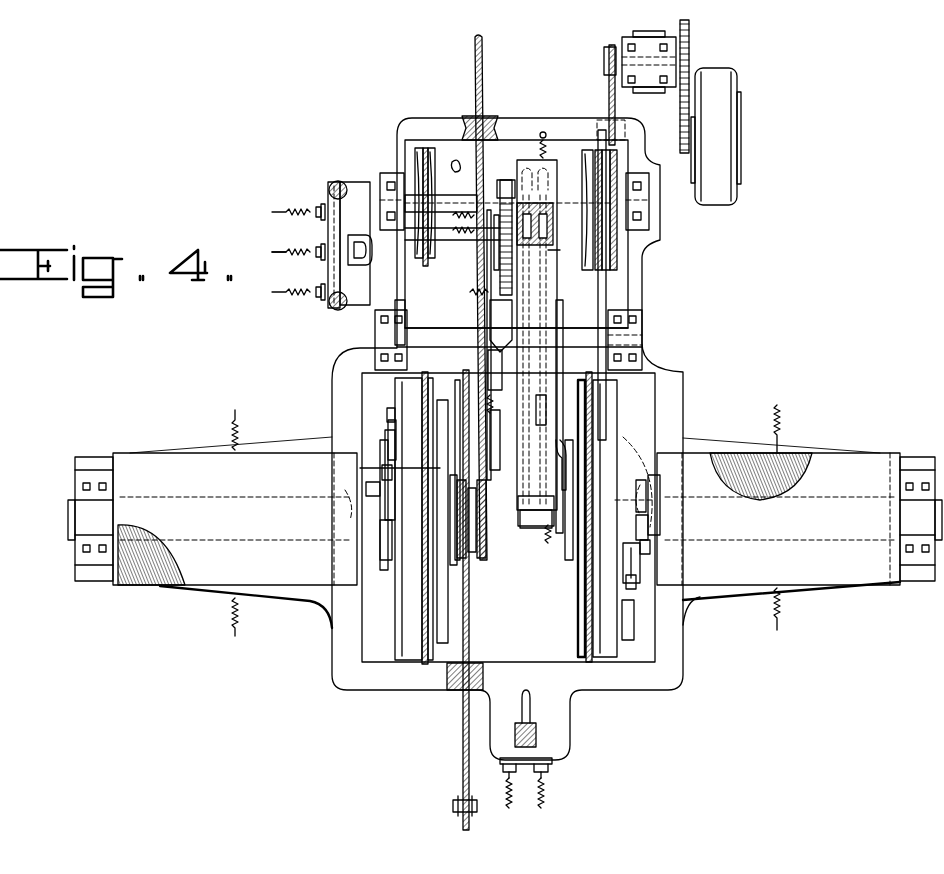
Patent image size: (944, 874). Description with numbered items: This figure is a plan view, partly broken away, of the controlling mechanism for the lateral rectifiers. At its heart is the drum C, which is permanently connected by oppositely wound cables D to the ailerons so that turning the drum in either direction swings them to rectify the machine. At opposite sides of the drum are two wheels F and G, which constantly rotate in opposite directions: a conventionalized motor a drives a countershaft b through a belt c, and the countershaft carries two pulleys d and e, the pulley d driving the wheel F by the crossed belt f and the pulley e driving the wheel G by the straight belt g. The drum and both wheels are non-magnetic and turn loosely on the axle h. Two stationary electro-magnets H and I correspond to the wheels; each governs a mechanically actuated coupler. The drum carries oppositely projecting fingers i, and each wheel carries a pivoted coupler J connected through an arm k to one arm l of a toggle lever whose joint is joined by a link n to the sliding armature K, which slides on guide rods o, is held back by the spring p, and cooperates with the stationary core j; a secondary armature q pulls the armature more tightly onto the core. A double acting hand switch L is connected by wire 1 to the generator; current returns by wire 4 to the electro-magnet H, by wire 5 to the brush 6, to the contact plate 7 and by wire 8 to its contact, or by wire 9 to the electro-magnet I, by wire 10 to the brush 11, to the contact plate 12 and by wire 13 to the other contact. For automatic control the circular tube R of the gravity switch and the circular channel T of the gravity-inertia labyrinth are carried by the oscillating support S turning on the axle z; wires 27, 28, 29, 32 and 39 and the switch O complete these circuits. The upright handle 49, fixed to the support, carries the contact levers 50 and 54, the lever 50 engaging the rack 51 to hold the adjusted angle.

The cables D is at (475, 60).
The circular tube R is at (515, 180).
The circular channel T is at (553, 160).
The wire 39 is at (540, 135).
The belt c is at (609, 95).
The motor a is at (712, 78).
The pulley e is at (605, 162).
The countershaft b is at (418, 176).
The pulley d is at (450, 197).
The wire 8 is at (460, 213).
The rack 51 is at (512, 205).
The hand switch L is at (332, 195).
The wire 1 is at (285, 252).
The wire 5 is at (288, 292).
The wire 13 is at (480, 240).
The brush 6 is at (470, 262).
The contact lever 50 is at (500, 290).
The upright handle 49 is at (492, 330).
The contact plate 7 is at (540, 300).
The wire 27 is at (560, 250).
The contact plate 12 is at (540, 400).
The straight belt g is at (592, 280).
The oscillating support S is at (607, 240).
The crossed belt f is at (378, 335).
The axle z is at (395, 355).
The contact lever 54 is at (495, 352).
The wire 10 is at (490, 398).
The arm k is at (387, 415).
The sliding armature K is at (392, 445).
The guide rods o is at (418, 455).
The fingers i is at (575, 470).
The axle h is at (640, 435).
The coupler J is at (420, 468).
The link n is at (366, 488).
The toggle lever arm l is at (437, 495).
The brush 11 is at (490, 425).
The secondary armature q is at (648, 488).
The stationary core j is at (345, 492).
The electro-magnet H is at (160, 590).
The wire 4 is at (235, 632).
The spring p is at (390, 572).
The drum C is at (478, 552).
The wire 32 is at (548, 545).
The electro-magnet I is at (832, 582).
The wire 9 is at (777, 630).
The wheel F is at (400, 640).
The wheel G is at (609, 650).
The switch O is at (530, 720).
The wire 28 is at (509, 808).
The wire 29 is at (543, 810).